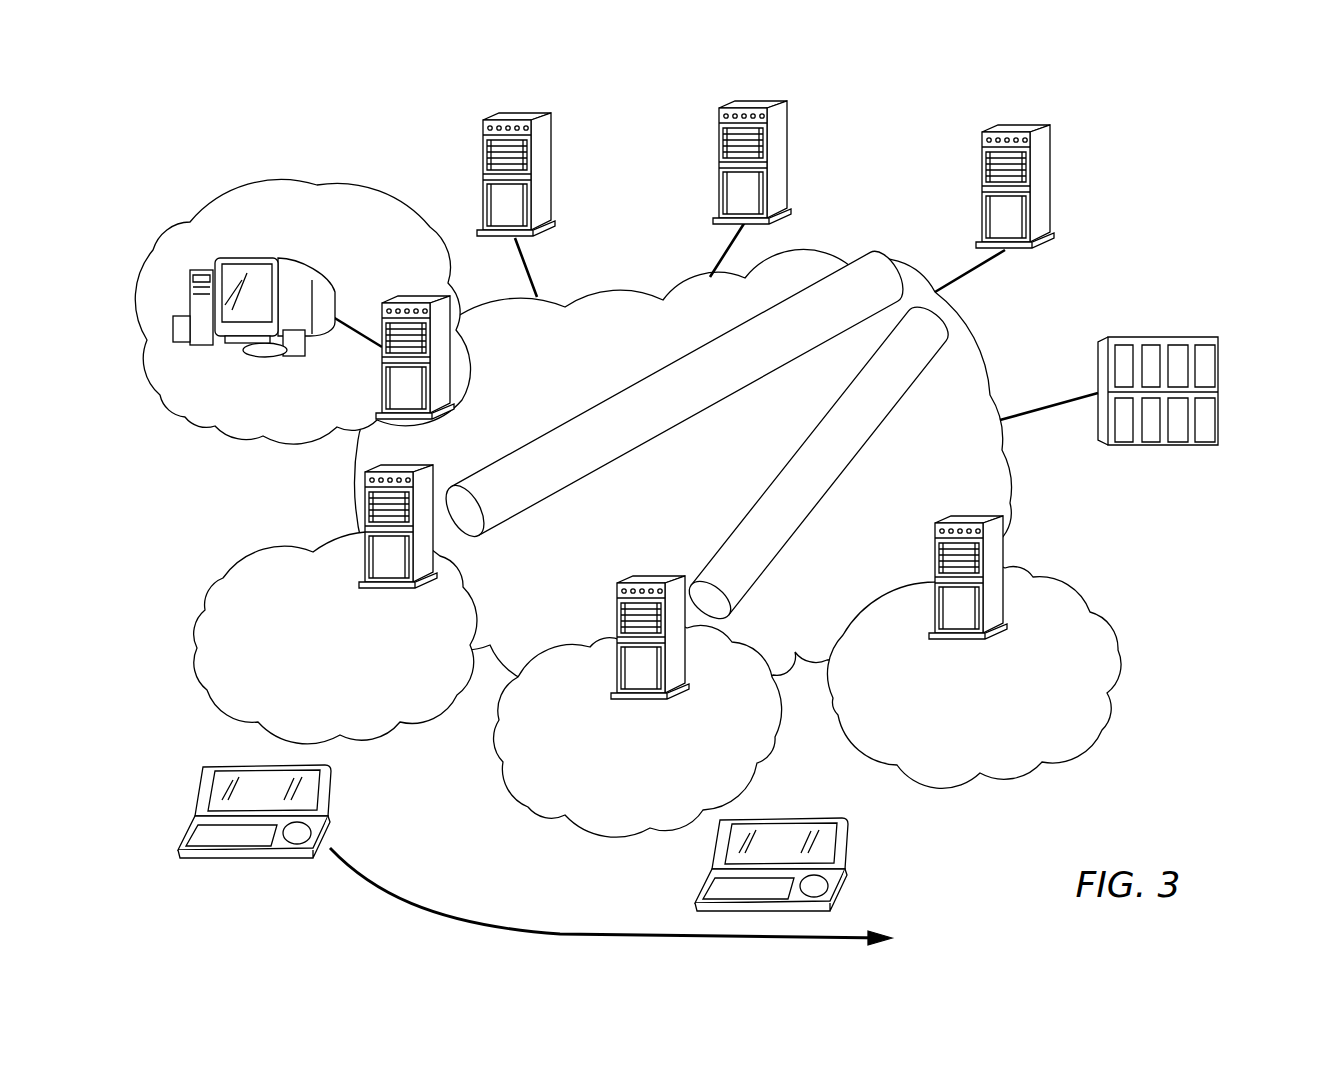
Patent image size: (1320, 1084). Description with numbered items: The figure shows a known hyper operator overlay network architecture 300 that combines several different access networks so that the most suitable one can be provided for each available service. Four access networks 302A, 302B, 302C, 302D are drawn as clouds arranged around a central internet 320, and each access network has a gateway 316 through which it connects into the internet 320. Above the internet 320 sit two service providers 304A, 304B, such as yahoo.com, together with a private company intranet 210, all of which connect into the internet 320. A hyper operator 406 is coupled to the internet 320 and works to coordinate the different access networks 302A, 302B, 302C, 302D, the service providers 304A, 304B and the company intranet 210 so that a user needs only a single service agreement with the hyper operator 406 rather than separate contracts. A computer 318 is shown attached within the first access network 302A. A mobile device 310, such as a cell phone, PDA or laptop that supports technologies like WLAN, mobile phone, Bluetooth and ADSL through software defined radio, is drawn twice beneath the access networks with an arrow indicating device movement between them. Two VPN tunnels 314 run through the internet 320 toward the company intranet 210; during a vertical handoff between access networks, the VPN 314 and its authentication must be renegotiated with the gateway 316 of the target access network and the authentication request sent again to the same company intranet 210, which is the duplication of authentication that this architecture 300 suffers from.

The hyper operator overlay network architecture 300 is at (701, 494).
The access network 302A is at (162, 407).
The access network 302B is at (198, 636).
The access network 302C is at (516, 805).
The access network 302D is at (1120, 648).
The service provider 304A is at (552, 158).
The service provider 304B is at (790, 148).
The company intranet 210 is at (1052, 175).
The mobile device 310 is at (196, 822).
The VPN 314 is at (783, 468).
The gateway 316 is at (405, 470).
The computer 318 is at (300, 258).
The internet 320 is at (579, 350).
The hyper operator 406 is at (1218, 418).